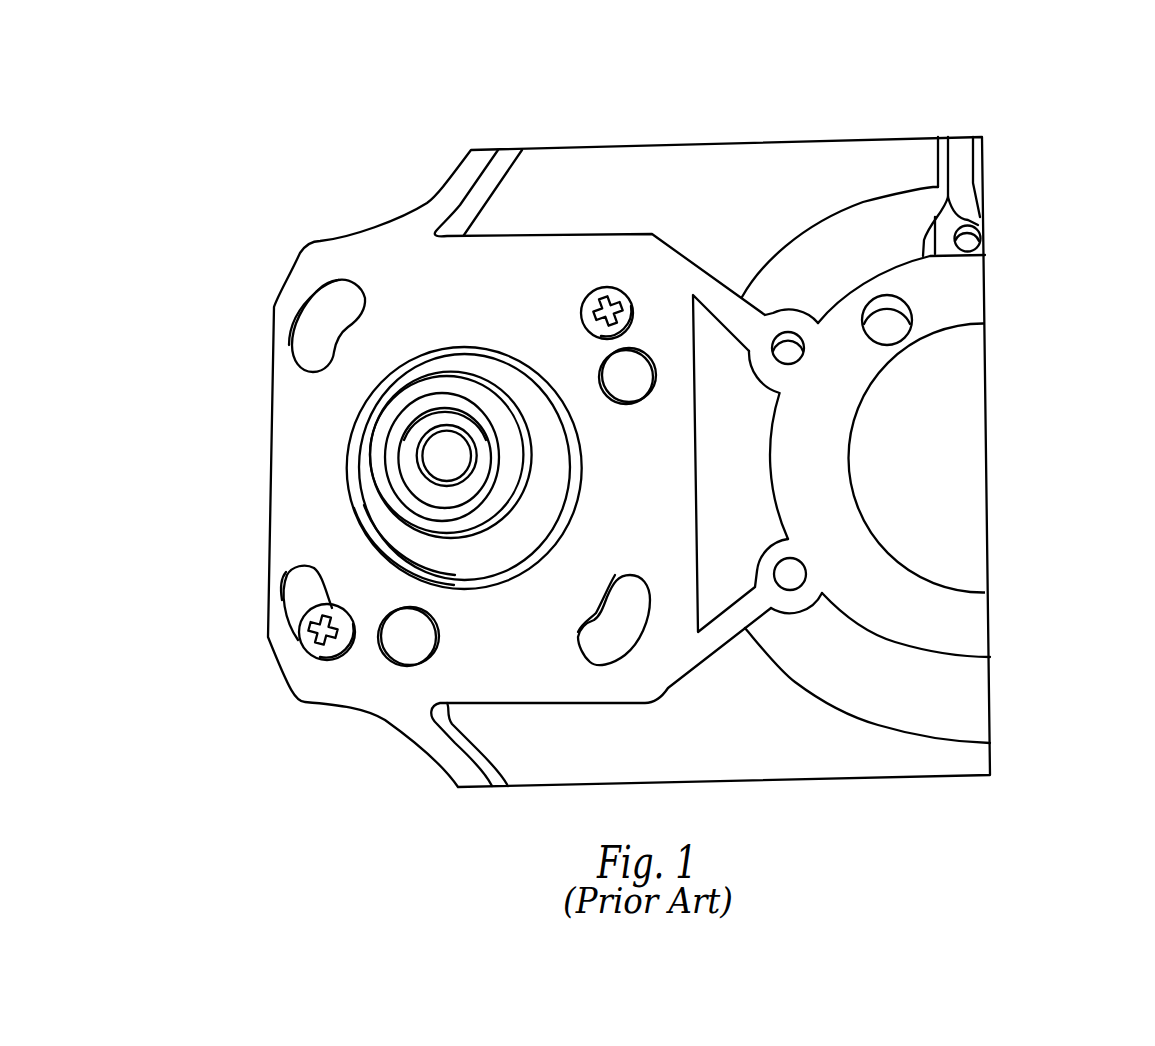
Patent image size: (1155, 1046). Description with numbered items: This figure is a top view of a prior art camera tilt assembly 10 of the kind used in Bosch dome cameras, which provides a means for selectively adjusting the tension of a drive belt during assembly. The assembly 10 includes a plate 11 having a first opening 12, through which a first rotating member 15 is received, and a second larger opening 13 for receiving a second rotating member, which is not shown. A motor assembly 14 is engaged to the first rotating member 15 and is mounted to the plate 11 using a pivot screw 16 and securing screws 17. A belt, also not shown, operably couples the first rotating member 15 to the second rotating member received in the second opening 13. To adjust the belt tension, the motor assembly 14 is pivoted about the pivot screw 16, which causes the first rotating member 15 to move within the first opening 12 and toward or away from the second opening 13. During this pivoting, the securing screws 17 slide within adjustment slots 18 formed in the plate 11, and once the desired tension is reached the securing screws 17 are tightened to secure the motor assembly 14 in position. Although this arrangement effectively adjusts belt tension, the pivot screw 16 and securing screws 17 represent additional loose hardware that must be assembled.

The tilt assembly 10 is at (1045, 154).
The plate 11 is at (722, 163).
The first opening 12 is at (432, 350).
The second larger opening 13 is at (950, 325).
The motor assembly 14 is at (552, 473).
The first rotating member 15 is at (420, 480).
The pivot screw 16 is at (617, 293).
The securing screws 17 is at (307, 636).
The adjustment slots 18 is at (310, 335).